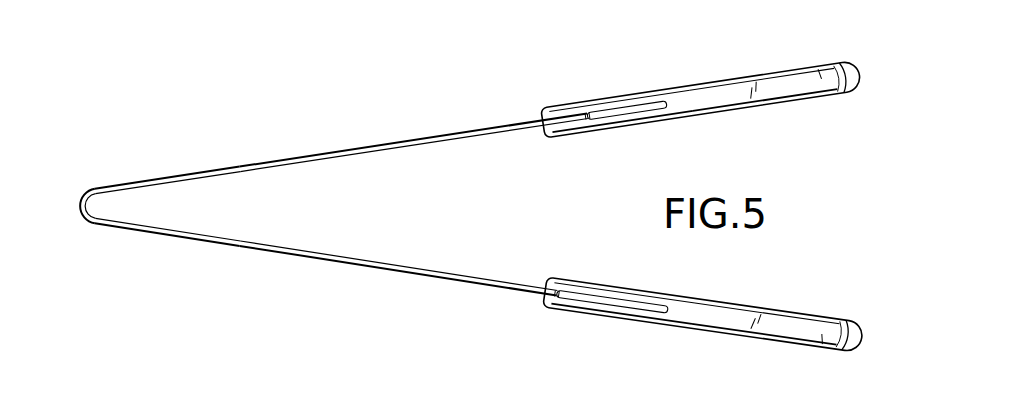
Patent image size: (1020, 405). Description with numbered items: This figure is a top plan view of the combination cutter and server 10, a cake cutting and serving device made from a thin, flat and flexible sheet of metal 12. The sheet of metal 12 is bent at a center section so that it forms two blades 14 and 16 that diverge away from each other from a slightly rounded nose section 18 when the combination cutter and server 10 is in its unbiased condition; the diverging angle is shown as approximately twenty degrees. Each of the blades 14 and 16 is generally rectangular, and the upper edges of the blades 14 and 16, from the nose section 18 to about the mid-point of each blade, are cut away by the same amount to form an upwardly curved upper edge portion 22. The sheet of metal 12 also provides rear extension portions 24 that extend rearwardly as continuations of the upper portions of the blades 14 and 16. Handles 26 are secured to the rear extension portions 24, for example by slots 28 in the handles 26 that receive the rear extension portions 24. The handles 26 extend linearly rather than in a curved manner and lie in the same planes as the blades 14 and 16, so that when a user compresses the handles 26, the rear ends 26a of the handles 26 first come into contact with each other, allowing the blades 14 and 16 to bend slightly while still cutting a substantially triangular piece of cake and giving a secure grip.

The combination cutter and server 10 is at (474, 197).
The thin, flat and flexible sheet of metal 12 is at (318, 199).
The blade 14 is at (432, 137).
The blade 16 is at (390, 272).
The nose section 18 is at (78, 206).
The upwardly curved upper edge portion 22 is at (168, 177).
The rear extension portion 24 is at (632, 108).
The handle 26 is at (722, 110).
The rear end of handle 26a is at (860, 62).
The slot 28 is at (573, 112).